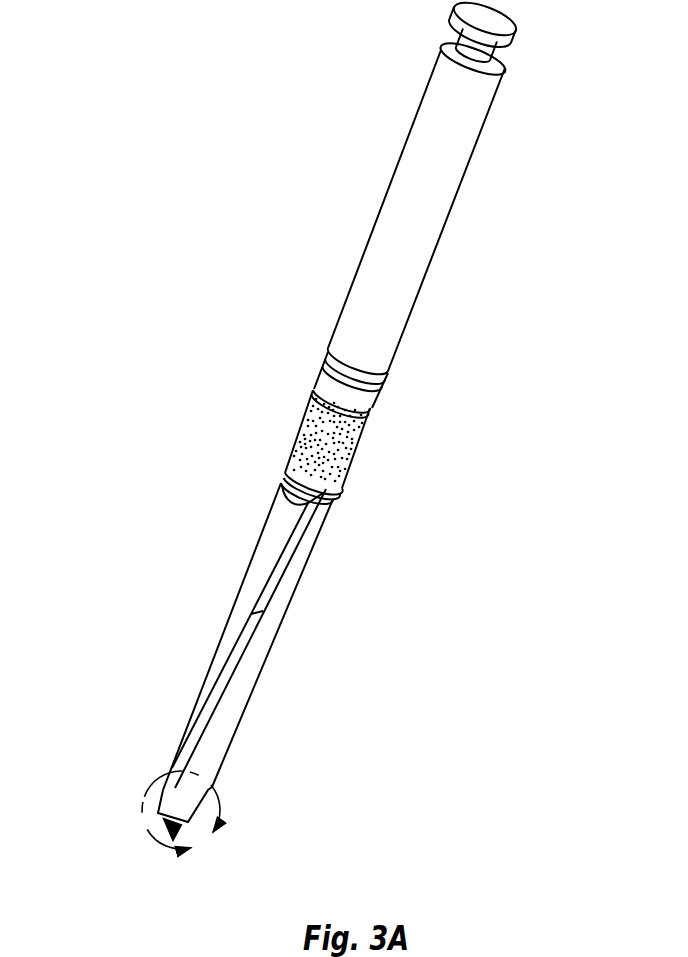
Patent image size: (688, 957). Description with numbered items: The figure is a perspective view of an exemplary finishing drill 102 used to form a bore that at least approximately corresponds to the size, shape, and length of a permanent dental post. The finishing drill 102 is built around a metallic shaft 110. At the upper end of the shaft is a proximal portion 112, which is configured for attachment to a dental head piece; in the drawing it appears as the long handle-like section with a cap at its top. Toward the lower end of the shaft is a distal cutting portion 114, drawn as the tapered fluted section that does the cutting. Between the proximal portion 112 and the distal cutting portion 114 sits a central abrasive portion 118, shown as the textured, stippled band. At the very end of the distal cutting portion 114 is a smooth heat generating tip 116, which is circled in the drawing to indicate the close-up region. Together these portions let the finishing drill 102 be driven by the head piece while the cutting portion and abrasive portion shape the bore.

The finishing drill 102 is at (532, 159).
The proximal portion 112 is at (396, 85).
The metallic shaft 110 is at (356, 392).
The central abrasive portion 118 is at (330, 460).
The distal cutting portion 114 is at (152, 773).
The heat generating tip 116 is at (141, 830).